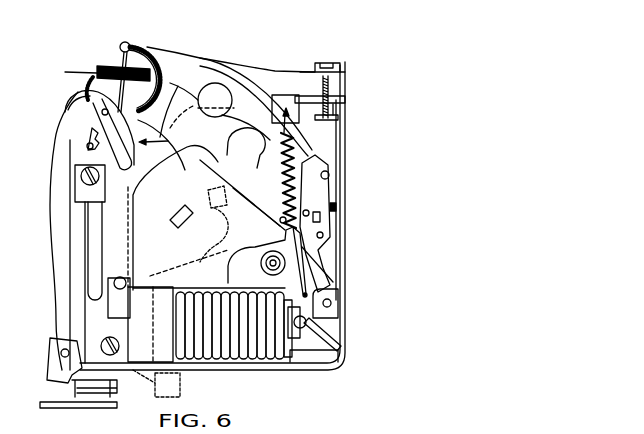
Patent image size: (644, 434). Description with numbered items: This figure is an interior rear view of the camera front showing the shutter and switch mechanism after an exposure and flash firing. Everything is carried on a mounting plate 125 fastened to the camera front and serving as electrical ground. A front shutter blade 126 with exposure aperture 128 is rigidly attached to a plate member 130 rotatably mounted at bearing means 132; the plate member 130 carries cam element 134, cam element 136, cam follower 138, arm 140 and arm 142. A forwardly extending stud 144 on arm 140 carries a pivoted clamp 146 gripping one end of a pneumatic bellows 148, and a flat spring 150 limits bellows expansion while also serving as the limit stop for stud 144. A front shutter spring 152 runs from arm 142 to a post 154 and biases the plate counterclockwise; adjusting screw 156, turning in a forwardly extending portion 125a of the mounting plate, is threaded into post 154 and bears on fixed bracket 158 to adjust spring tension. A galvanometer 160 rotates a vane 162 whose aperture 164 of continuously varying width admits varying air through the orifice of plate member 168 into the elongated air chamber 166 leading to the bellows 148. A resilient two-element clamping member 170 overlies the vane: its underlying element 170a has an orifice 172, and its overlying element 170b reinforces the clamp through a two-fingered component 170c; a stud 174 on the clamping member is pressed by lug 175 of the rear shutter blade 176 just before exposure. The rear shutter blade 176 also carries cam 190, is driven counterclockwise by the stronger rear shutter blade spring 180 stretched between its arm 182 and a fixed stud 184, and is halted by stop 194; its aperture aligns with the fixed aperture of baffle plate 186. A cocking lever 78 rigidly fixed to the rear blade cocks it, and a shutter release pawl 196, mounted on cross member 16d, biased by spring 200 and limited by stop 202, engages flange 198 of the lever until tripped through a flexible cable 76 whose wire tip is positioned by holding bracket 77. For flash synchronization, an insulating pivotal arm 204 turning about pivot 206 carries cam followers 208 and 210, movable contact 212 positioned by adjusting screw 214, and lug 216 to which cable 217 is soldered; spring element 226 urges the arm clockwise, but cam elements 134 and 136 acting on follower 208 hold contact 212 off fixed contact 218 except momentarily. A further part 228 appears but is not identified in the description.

The galvanometer 160 is at (141, 35).
The vane aperture 164 is at (184, 96).
The air chamber 166 is at (221, 92).
The stop 194 is at (235, 78).
The electrical cable 217 is at (249, 79).
The cam 190 is at (250, 130).
The post 154 is at (281, 108).
The forwardly extending portion 125a is at (341, 65).
The adjusting screw 156 is at (318, 101).
The fixed bracket 158 is at (337, 119).
The front shutter spring 152 is at (338, 150).
The cable-connecting lug 216 is at (324, 148).
The pivot 206 is at (314, 180).
The spring element 226 is at (386, 161).
The fixed contact 218 is at (386, 175).
The electrical contact 212 is at (336, 206).
The adjusting screw 214 is at (388, 191).
The pivotal arm 204 is at (387, 204).
The cam element 136 is at (330, 240).
The cam follower 210 is at (330, 251).
The cam follower 208 is at (324, 270).
The cam element 134 is at (322, 297).
The arm 142 is at (340, 292).
The stud 144 is at (310, 322).
The flat spring 150 is at (343, 364).
The clamp 146 is at (306, 336).
The arm 140 is at (294, 340).
The pneumatic bellows 148 is at (237, 353).
The cocking lever 78 is at (182, 391).
The flange 198 is at (156, 385).
The cross member 16d is at (57, 408).
The holding bracket 77 is at (77, 405).
The flexible cable 76 is at (98, 395).
The spring 200 is at (50, 367).
The shutter release pawl 196 is at (54, 361).
The fixed stud 184 is at (65, 319).
The stop 202 is at (63, 303).
The rear shutter blade spring 180 is at (85, 279).
The arm 182 is at (71, 259).
The clamping member 170 is at (63, 239).
The overlying element 170b is at (117, 174).
The mounting plate 125 is at (53, 175).
The underlying element 170a is at (62, 160).
The two-fingered component 170c is at (66, 108).
The orifice 172 is at (92, 80).
The rear shutter blade member 176 is at (212, 151).
The plate member 168 is at (186, 162).
The vane 162 is at (160, 146).
The exposure aperture 128 is at (182, 207).
The front shutter blade 126 is at (194, 254).
The plate 186 is at (248, 180).
The spring 228 is at (281, 222).
The plate member 130 is at (256, 247).
The cam follower 138 is at (233, 278).
The bearing means 132 is at (310, 272).
The lug 175 is at (120, 290).
The stud 174 is at (106, 338).